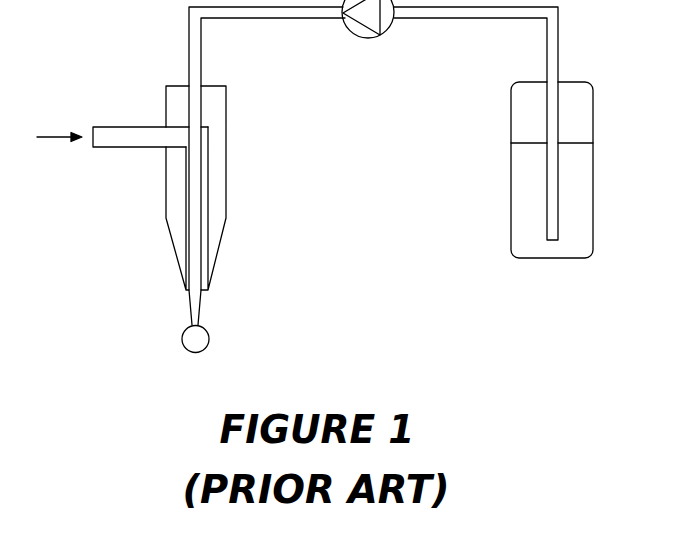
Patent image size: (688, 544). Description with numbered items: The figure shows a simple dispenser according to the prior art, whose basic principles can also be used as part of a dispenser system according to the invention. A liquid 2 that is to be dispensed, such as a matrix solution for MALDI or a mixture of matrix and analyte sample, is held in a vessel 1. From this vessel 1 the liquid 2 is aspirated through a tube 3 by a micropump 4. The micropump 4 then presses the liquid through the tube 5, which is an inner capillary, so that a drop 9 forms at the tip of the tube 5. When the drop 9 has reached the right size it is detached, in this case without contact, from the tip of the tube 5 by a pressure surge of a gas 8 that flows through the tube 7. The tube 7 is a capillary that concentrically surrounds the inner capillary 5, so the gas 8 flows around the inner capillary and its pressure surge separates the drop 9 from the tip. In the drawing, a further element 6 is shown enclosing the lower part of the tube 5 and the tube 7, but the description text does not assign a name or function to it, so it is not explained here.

The vessel 1 is at (542, 170).
The liquid 2 is at (552, 171).
The tube 3 is at (476, 123).
The micropump 4 is at (368, 37).
The tube 5 is at (267, 166).
The droplet forming vessel 6 is at (209, 188).
The tube 7 is at (150, 120).
The gas 8 is at (59, 121).
The drop 9 is at (183, 343).